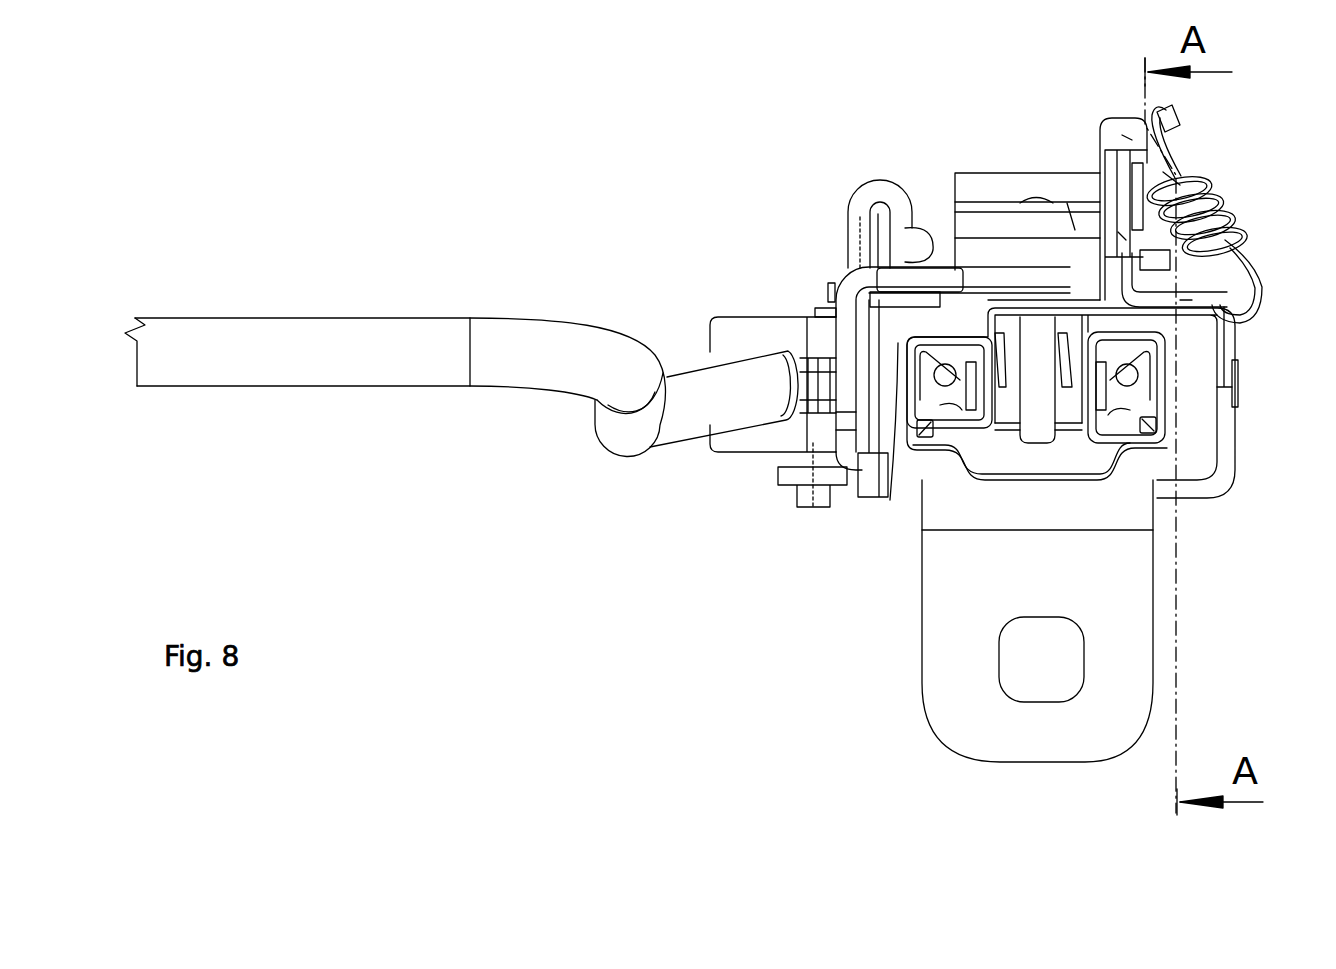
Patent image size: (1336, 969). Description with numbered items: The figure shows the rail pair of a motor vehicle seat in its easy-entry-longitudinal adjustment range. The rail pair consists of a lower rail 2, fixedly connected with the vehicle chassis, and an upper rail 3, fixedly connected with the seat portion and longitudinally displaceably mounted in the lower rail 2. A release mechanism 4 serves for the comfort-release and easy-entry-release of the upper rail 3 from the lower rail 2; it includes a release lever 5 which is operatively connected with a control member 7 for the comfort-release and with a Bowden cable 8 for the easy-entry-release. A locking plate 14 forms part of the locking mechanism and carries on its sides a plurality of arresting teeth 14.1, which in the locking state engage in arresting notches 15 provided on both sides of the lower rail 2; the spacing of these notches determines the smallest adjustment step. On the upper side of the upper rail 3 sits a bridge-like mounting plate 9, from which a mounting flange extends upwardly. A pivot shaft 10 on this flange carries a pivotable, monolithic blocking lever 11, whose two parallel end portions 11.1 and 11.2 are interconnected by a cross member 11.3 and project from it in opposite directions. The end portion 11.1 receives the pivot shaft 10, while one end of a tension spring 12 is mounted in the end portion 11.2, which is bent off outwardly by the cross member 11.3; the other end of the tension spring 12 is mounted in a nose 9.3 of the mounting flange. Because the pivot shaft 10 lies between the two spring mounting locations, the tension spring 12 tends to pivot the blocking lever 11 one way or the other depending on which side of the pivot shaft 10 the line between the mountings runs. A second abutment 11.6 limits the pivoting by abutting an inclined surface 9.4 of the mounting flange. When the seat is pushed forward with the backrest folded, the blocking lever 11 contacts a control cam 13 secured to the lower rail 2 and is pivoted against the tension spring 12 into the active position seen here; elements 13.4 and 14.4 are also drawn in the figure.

The lower rail 2 is at (890, 500).
The upper rail 3 is at (830, 288).
The release mechanism 4 is at (956, 84).
The release lever 5 is at (1238, 423).
The control member 7 is at (552, 331).
The Bowden cable 8 is at (925, 225).
The mounting plate 9 is at (1020, 172).
The nose 9.3 is at (1178, 120).
The inclined surface 9.4 is at (1068, 205).
The pivot shaft 10 is at (1165, 172).
The blocking lever 11 is at (1185, 300).
The end portion 11.1 is at (1125, 138).
The end portion 11.2 is at (1225, 340).
The cross member 11.3 is at (1183, 305).
The second abutment 11.6 is at (1120, 235).
The tension spring 12 is at (1228, 207).
The control cam 13 is at (1228, 458).
The housing latch 13.4 is at (1238, 370).
The locking plate 14 is at (1008, 425).
The arresting teeth 14.1 is at (1148, 434).
The rivet 14.4 is at (927, 425).
The arresting notches 15 is at (870, 347).